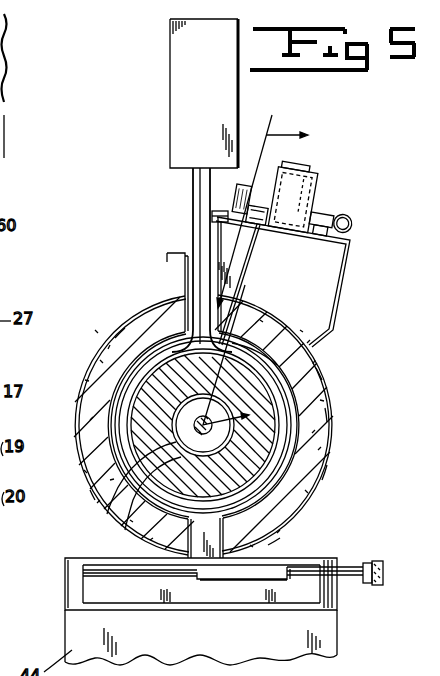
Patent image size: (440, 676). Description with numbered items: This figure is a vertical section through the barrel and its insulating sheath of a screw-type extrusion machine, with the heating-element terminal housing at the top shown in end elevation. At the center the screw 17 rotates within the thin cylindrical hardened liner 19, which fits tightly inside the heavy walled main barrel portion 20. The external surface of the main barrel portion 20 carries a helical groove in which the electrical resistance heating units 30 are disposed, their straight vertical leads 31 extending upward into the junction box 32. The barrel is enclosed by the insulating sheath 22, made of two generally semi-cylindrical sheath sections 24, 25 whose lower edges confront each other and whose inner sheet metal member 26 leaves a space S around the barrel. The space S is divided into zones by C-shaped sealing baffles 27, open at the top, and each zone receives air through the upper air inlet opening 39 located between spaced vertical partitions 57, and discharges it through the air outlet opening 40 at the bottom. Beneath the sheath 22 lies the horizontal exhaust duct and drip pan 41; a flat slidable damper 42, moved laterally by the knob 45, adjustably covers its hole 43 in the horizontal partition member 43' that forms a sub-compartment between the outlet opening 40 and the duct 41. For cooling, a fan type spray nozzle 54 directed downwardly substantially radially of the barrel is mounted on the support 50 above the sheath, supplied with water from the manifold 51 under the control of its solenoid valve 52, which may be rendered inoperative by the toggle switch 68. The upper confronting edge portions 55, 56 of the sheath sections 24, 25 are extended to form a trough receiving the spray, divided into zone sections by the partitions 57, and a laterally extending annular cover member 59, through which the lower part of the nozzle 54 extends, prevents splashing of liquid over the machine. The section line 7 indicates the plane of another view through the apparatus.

The junction box 32 is at (238, 102).
The vertical leads 31 is at (192, 212).
The upper confronting edge portion 55 is at (183, 273).
The annular cover member 59 is at (219, 210).
The insulating sheath 22 is at (62, 440).
The inner sheet metal member 26 is at (329, 412).
The sheath section 25 is at (331, 472).
The space S is at (319, 373).
The sealing baffle 27 is at (119, 343).
The sheath section 24 is at (92, 496).
The air outlet opening 40 is at (274, 545).
The electrical resistance heating unit 30 is at (153, 352).
The screw 17 is at (140, 536).
The cylindrical hardened liner 19 is at (114, 524).
The main barrel portion 20 is at (102, 504).
The section line 7- 7 is at (262, 271).
The support 50 is at (283, 282).
The upper confronting edge portion 56 is at (247, 268).
The vertical partition 57 is at (235, 255).
The upper air inlet opening 39 is at (240, 289).
The fan type spray nozzle 54 is at (243, 186).
The solenoid valve 52 is at (316, 184).
The manifold 51 is at (354, 220).
The toggle switch 68 is at (318, 237).
The exhaust duct and drip pan 41 is at (78, 591).
The hole 43 is at (185, 588).
The horizontal partition member 43' is at (140, 586).
The damper 42 is at (204, 579).
The knob 45 is at (378, 588).